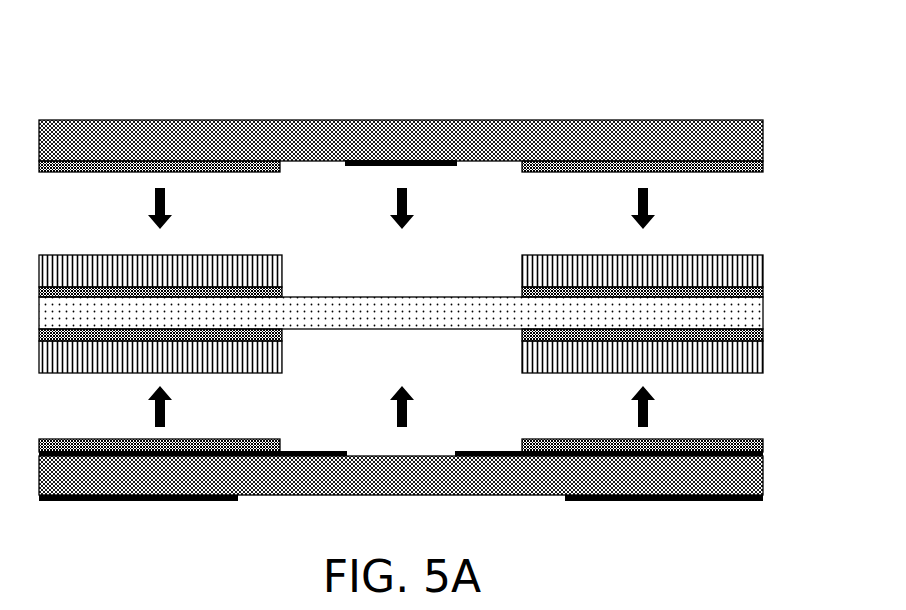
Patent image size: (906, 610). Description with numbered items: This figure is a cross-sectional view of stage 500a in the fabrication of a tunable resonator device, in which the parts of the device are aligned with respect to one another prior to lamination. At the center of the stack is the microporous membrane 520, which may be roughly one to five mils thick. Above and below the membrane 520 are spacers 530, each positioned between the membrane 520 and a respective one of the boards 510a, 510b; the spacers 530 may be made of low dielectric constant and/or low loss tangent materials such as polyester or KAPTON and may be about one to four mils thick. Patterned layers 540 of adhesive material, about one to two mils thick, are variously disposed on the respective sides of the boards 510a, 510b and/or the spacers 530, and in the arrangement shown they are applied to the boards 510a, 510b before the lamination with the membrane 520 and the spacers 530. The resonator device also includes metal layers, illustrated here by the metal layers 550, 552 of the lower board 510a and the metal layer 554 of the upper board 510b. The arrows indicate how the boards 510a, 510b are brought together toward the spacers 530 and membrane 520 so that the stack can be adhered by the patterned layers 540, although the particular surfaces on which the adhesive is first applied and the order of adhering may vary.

The stage 500a is at (124, 82).
The board 510a is at (378, 486).
The board 510b is at (376, 151).
The microporous membrane 520 is at (383, 322).
The spacers 530 is at (141, 283).
The patterned layers of adhesive material 540 is at (286, 292).
The metal layer 550 is at (211, 506).
The metal layer 552 is at (111, 464).
The metal layer 554 is at (399, 171).